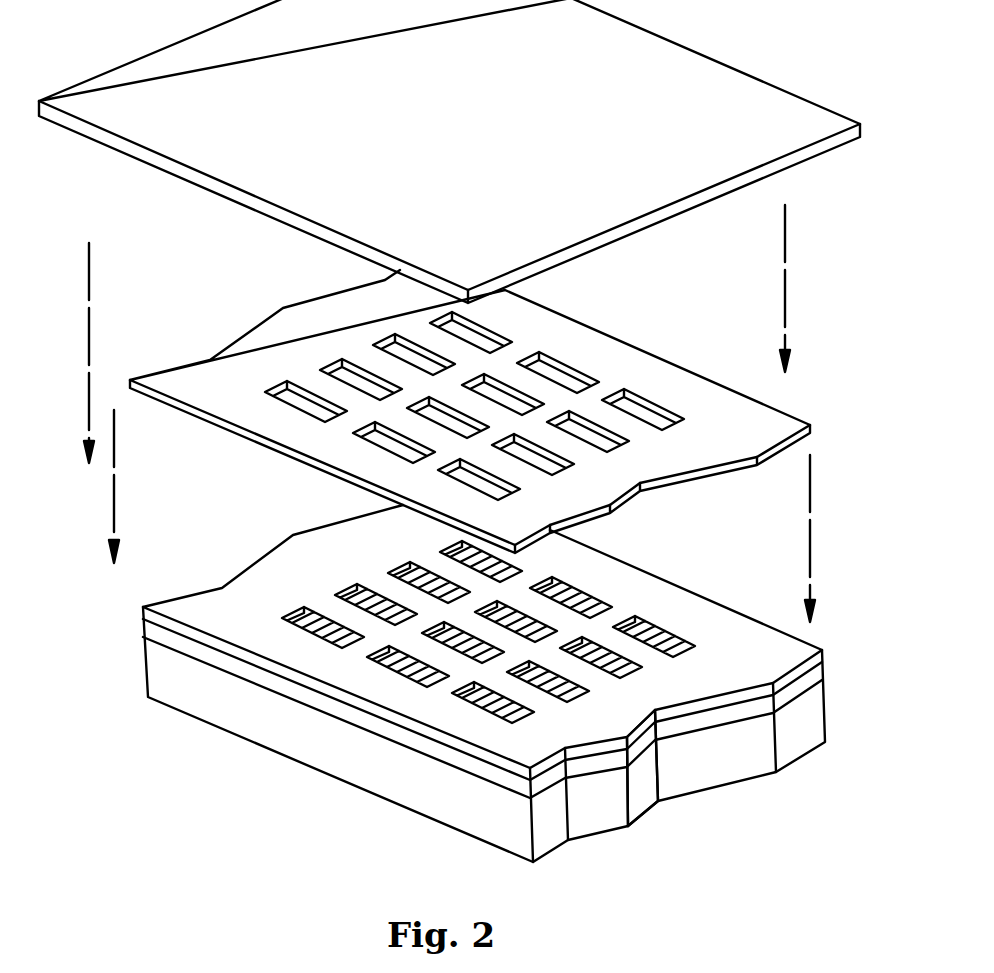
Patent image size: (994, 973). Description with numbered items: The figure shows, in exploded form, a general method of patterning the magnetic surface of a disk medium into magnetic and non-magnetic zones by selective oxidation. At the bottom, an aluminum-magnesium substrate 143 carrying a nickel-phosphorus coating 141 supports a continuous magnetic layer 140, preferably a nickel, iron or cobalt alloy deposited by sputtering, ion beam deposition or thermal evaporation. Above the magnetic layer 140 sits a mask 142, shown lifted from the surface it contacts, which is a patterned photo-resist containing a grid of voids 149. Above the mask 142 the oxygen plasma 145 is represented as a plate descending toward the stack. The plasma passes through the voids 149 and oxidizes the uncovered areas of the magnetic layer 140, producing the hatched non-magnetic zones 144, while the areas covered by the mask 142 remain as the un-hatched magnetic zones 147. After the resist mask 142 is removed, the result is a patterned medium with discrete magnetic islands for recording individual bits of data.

The magnetic layer 140 is at (297, 678).
The nickel-phosphorus coating 141 is at (443, 681).
The mask 142 is at (378, 481).
The substrate 143 is at (647, 800).
The non-magnetic zones 144 is at (305, 617).
The oxygen plasma 145 is at (185, 154).
The magnetic zones 147 is at (237, 587).
The voids 149 is at (628, 410).